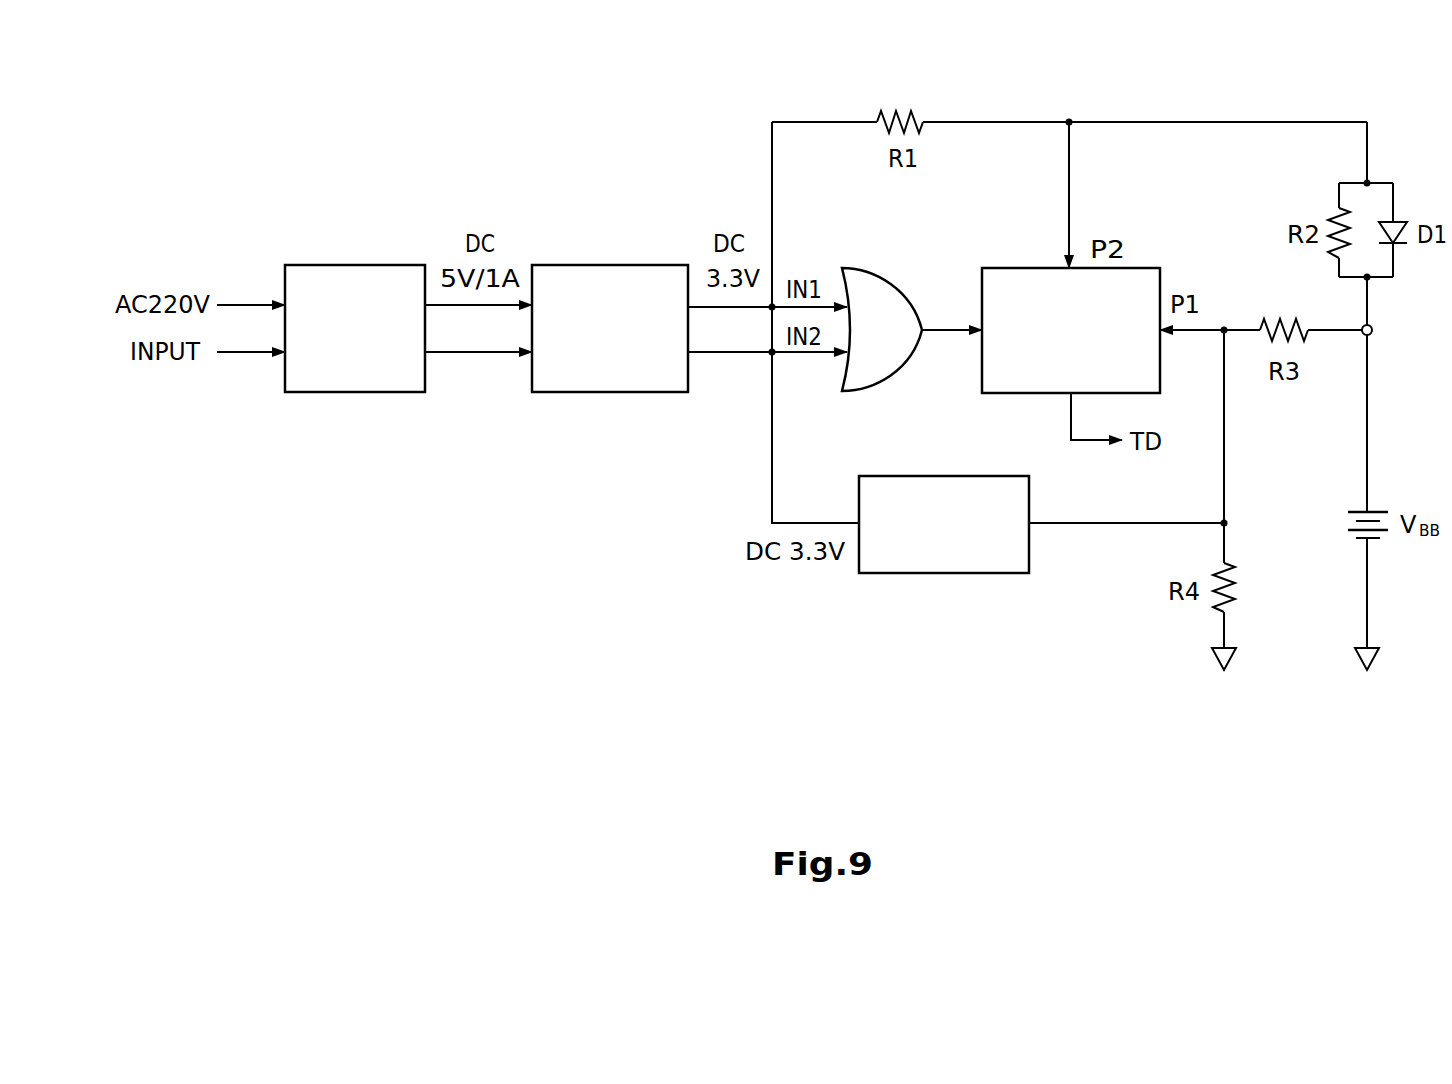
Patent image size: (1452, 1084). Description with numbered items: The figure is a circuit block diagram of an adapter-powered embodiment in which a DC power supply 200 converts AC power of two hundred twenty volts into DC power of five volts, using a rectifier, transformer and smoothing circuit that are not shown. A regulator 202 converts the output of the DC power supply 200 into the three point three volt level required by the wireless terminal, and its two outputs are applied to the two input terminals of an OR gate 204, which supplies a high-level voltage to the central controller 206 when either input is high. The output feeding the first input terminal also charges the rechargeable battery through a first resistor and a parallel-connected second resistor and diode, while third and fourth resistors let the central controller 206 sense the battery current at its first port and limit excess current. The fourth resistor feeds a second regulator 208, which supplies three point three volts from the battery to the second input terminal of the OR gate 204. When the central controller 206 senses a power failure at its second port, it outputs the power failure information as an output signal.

The DC power supply 200 is at (355, 263).
The regulator 202 is at (610, 263).
The OR gate 204 is at (882, 270).
The central controller 206 is at (1033, 267).
The regulator 208 is at (944, 475).